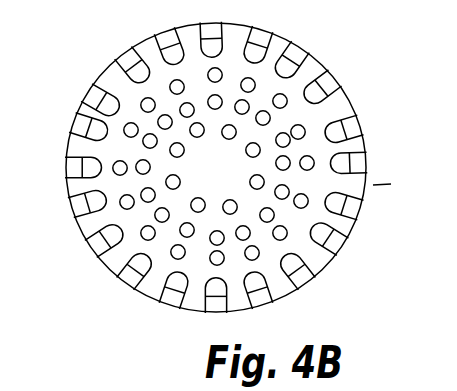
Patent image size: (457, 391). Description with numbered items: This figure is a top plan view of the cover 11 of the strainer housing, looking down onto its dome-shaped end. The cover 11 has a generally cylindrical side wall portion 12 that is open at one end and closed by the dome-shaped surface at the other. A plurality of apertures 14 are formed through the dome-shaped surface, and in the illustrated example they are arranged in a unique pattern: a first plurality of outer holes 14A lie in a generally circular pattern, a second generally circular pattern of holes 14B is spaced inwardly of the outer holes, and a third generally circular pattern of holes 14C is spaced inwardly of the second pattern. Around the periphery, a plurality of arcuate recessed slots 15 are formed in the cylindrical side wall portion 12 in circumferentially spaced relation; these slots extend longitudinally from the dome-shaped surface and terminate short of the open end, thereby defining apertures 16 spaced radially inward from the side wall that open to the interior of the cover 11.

The cover 11 is at (372, 140).
The cylindrical side wall portion 12 is at (395, 186).
The apertures 14 is at (246, 152).
The outer holes 14A is at (113, 164).
The second circular pattern of holes 14B is at (141, 189).
The third circular pattern of holes 14C is at (201, 198).
The arcuate recessed slots 15 is at (350, 122).
The apertures 16 is at (140, 72).